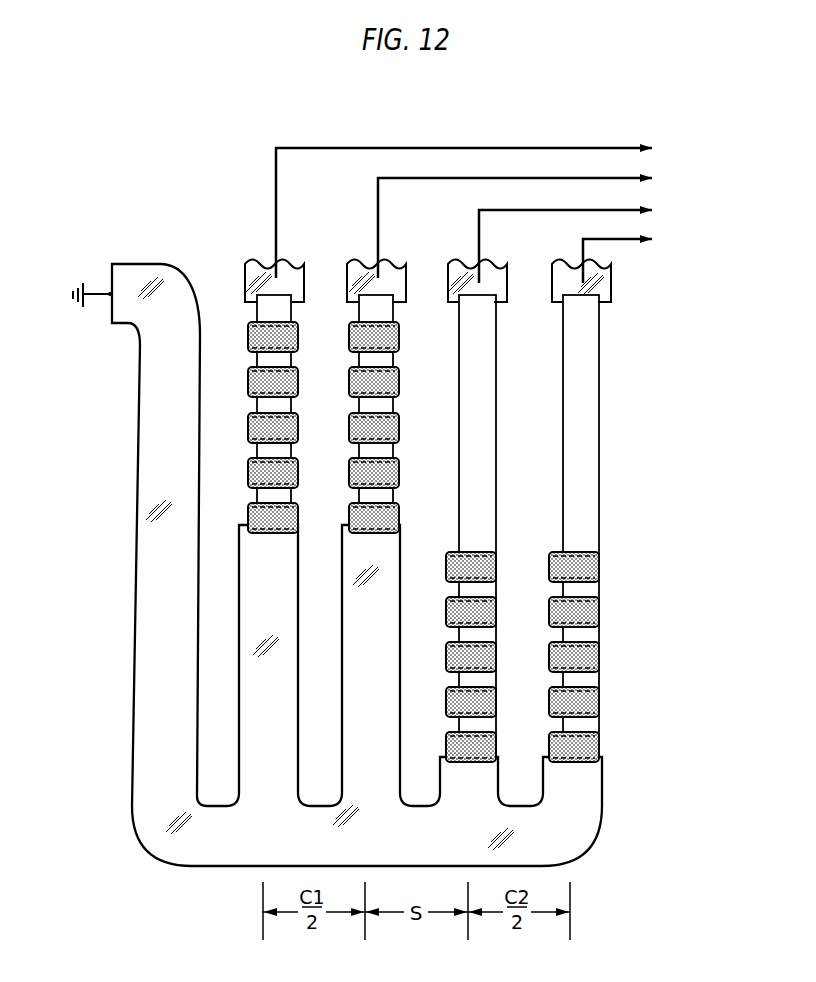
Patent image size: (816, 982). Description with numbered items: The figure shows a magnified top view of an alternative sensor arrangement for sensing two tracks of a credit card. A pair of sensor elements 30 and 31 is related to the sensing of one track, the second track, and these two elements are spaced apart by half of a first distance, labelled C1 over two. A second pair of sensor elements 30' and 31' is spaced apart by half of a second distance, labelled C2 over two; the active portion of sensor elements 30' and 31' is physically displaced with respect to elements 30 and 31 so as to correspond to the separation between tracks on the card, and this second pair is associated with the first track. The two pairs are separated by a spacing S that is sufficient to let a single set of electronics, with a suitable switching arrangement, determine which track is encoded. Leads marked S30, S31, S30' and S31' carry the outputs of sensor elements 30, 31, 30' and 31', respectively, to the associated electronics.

The sensor element 30 is at (592, 511).
The sensor element 31 is at (467, 511).
The sensor element 30' is at (393, 397).
The sensor element 31' is at (263, 397).
The signal lead to electrode 30 S30 is at (641, 255).
The signal lead to electrode 31 S31 is at (589, 240).
The signal lead to electrode 30' S30' is at (541, 223).
The signal lead to electrode 31' S31' is at (490, 208).